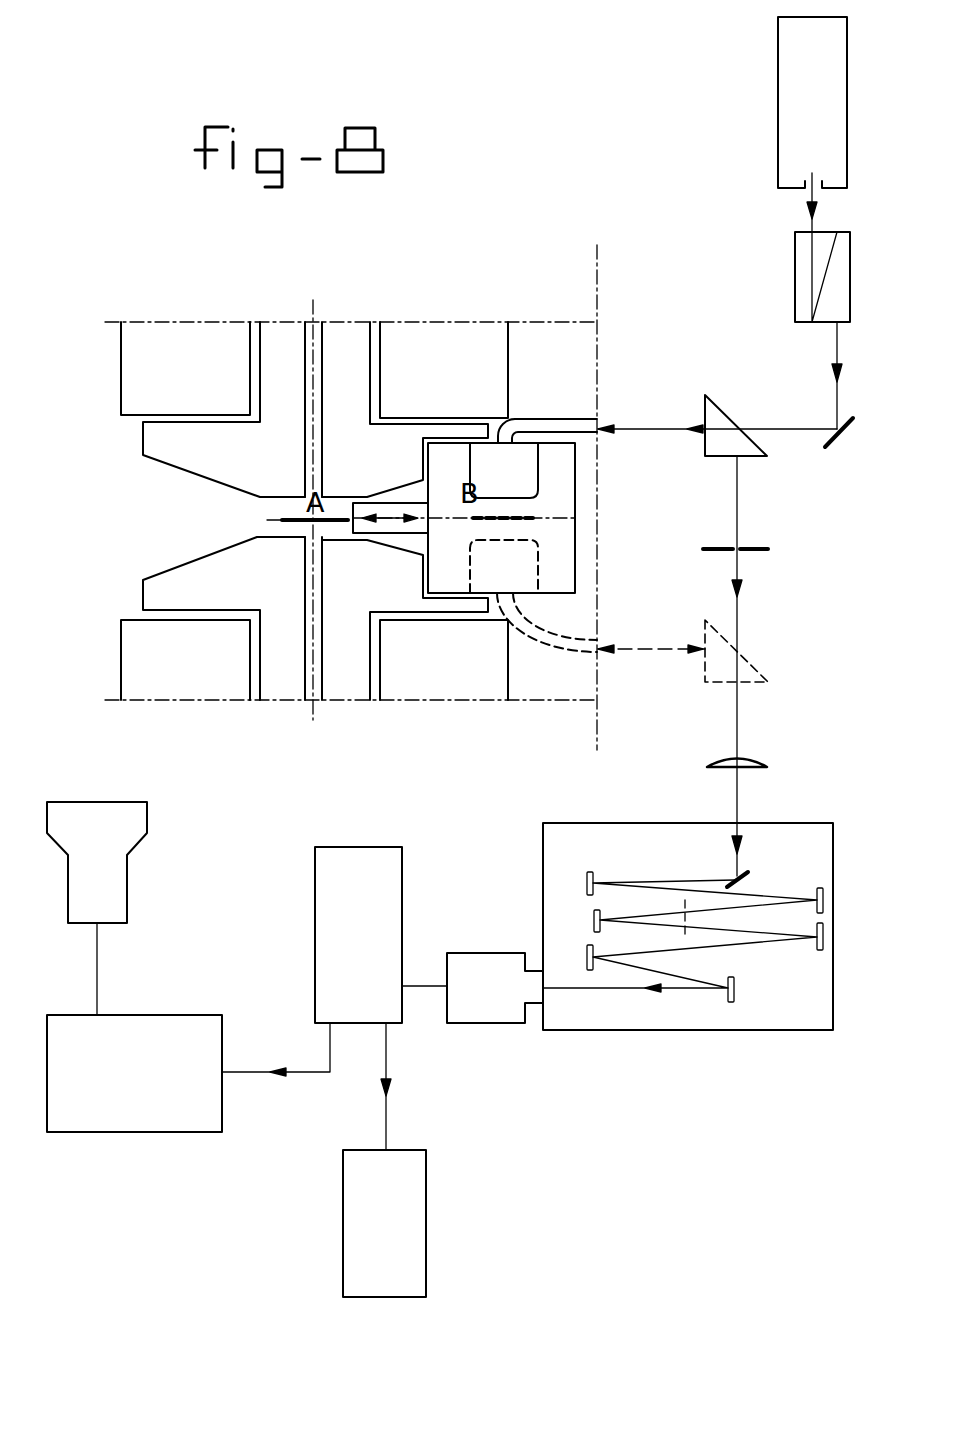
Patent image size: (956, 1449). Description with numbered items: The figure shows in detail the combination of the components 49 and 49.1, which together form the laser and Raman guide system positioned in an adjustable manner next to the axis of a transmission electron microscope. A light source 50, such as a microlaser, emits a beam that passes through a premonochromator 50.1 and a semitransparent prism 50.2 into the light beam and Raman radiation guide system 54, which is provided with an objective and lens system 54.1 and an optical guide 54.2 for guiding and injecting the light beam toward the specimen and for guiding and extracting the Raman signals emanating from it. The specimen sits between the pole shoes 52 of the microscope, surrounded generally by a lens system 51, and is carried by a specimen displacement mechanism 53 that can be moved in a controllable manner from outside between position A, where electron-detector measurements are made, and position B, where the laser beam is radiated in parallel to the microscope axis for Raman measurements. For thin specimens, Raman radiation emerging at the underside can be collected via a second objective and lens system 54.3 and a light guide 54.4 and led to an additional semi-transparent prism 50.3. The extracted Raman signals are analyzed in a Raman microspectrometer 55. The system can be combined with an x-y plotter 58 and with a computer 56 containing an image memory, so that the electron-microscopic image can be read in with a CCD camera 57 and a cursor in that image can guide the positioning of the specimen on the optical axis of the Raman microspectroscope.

The component 49 is at (853, 592).
The component 49.1 is at (584, 527).
The light source 50 is at (792, 101).
The premonochromator 50.1 is at (802, 272).
The semitransparent prism 50.2 is at (752, 452).
The semi-transparent prism 50.3 is at (752, 665).
The lens system 51 is at (133, 357).
The pole shoes 52 is at (176, 585).
The specimen displacement mechanism 53 is at (391, 534).
The light beam and Raman radiation guide system 54 is at (576, 568).
The objective and lens system 54.1 is at (527, 477).
The optical guide 54.2 is at (562, 421).
The second objective and lens system 54.3 is at (568, 610).
The light guide 54.4 is at (553, 642).
The Raman microspectrometer 55 is at (386, 880).
The computer 56 is at (160, 1028).
The CCD camera 57 is at (113, 896).
The x-y plotter 58 is at (413, 1203).